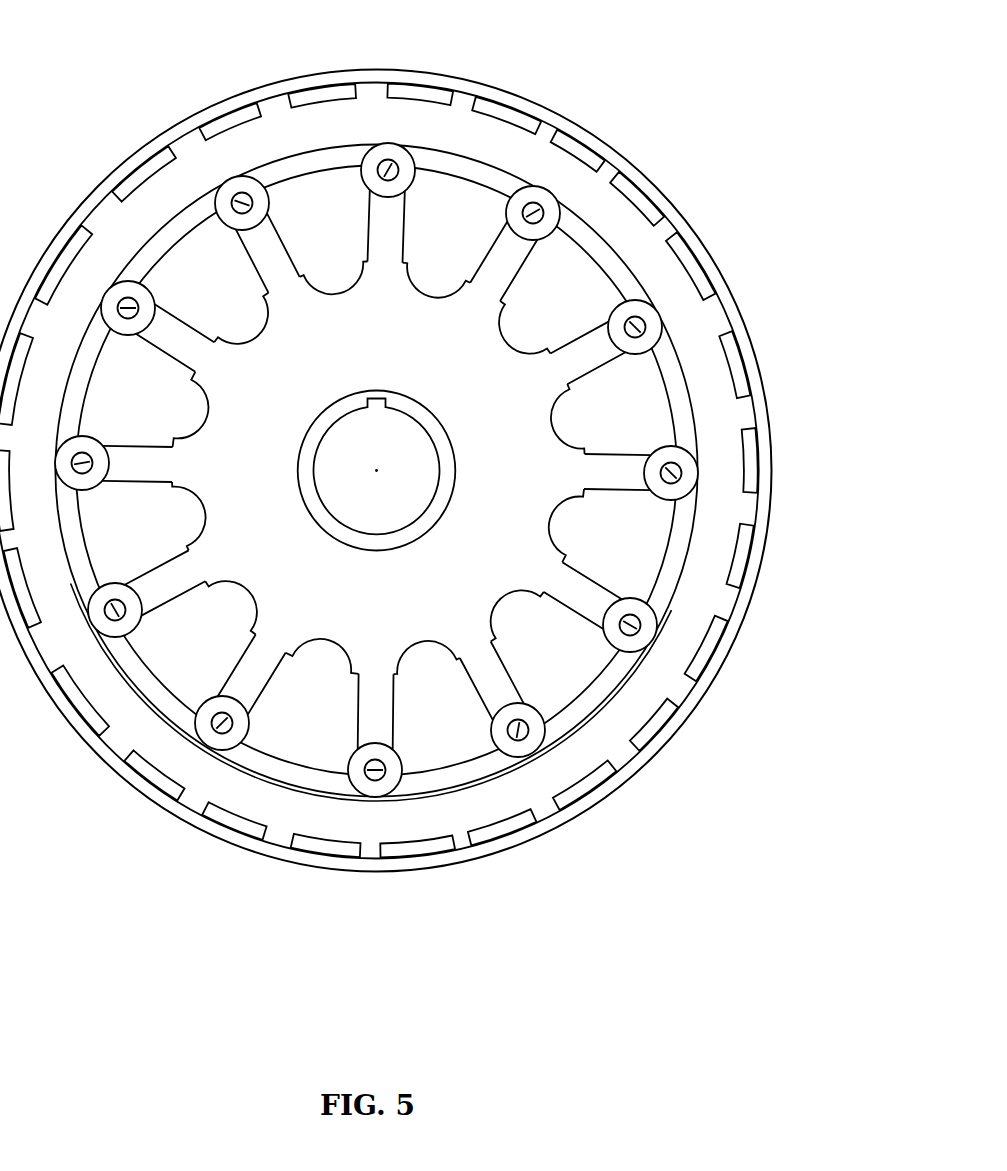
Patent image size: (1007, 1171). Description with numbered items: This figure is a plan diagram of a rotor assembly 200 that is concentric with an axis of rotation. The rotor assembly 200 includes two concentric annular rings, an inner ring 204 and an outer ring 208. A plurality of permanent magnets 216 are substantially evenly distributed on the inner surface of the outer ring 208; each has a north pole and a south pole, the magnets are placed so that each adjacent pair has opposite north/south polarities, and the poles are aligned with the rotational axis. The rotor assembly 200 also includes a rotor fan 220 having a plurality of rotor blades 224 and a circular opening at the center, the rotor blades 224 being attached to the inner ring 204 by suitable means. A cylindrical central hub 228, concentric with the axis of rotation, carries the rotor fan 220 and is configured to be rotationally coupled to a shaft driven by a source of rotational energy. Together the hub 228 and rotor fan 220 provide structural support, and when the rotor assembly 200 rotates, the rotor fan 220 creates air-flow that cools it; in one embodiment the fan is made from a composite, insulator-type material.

The rotor assembly 200 is at (434, 480).
The inner ring 204 is at (431, 472).
The outer ring 208 is at (742, 320).
The permanent magnets 216 is at (416, 94).
The rotor fan 220 is at (497, 604).
The rotor blades 224 is at (263, 687).
The cylindrical central hub 228 is at (432, 515).